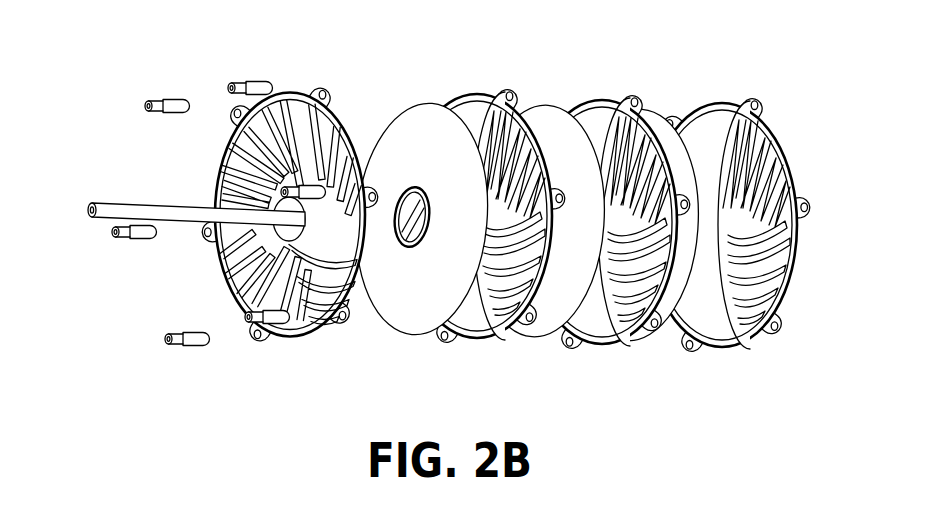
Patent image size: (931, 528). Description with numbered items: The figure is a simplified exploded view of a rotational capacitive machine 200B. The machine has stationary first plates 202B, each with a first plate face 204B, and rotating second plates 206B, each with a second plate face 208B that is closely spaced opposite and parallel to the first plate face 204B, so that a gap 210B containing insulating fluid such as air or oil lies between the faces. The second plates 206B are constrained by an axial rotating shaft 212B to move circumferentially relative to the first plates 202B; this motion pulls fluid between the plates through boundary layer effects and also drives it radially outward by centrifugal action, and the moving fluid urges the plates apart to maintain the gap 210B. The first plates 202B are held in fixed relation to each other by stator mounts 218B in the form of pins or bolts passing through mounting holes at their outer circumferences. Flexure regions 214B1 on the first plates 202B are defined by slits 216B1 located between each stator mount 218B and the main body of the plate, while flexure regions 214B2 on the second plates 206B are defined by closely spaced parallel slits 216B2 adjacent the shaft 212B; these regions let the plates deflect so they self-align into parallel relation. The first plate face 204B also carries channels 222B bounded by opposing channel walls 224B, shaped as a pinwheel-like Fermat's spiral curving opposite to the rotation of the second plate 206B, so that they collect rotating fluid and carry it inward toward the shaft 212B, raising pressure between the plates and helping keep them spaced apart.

The capacitive machine 200B is at (516, 50).
The first plate 202B is at (288, 337).
The first plate face 204B is at (318, 308).
The second plate 206B is at (414, 335).
The second plate face 208B is at (409, 317).
The gap 210B is at (359, 117).
The axial rotating shaft 212B is at (143, 203).
The flexure region 214B1 is at (282, 92).
The slits 216B1 is at (297, 93).
The flexure region 214B2 is at (418, 187).
The slits 216B2 is at (411, 188).
The stator mount 218B is at (193, 343).
The channels 222B is at (233, 247).
The channel walls 224B is at (228, 265).